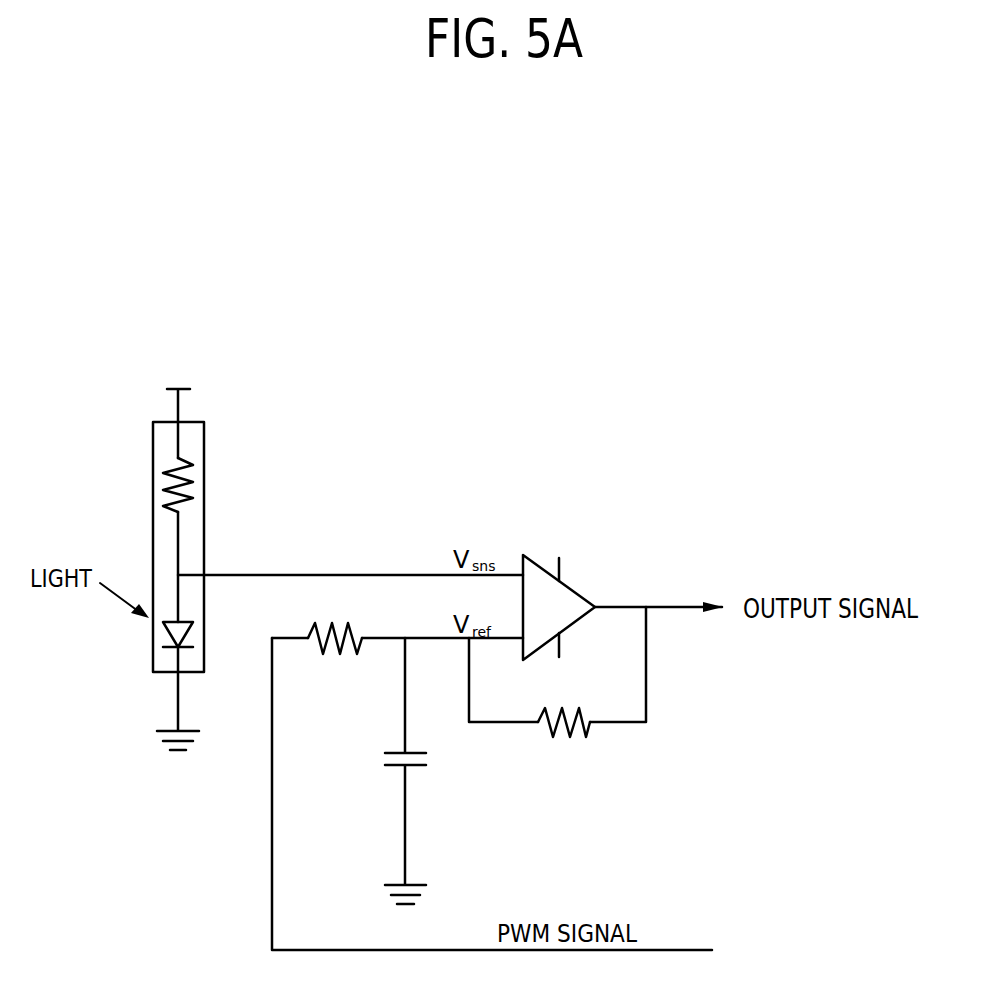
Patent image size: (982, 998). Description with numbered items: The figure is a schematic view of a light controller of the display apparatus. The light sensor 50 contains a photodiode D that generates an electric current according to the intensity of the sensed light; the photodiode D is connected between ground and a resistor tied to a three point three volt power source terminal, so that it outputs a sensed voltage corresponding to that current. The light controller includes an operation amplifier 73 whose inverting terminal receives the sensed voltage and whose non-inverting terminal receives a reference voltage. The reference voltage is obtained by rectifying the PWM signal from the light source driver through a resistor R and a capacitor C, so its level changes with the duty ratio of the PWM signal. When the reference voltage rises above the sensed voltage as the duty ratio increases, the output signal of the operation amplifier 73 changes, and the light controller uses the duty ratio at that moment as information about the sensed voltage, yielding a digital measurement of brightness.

The light sensor 50 is at (136, 553).
The operation amplifier 73 is at (527, 553).
The photodiode D is at (153, 644).
The resistor R is at (335, 623).
The capacitor C is at (394, 771).